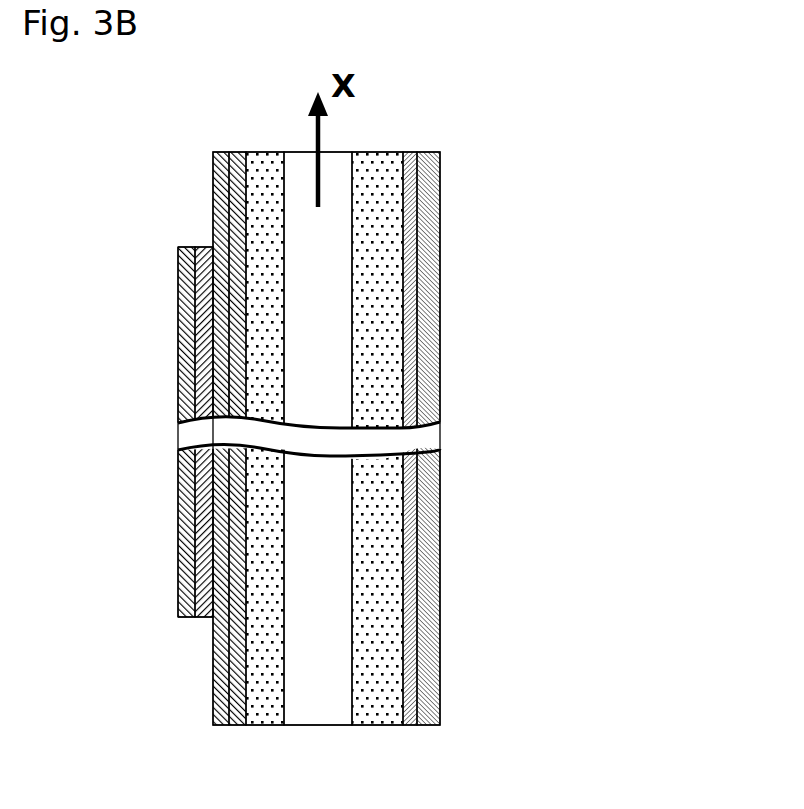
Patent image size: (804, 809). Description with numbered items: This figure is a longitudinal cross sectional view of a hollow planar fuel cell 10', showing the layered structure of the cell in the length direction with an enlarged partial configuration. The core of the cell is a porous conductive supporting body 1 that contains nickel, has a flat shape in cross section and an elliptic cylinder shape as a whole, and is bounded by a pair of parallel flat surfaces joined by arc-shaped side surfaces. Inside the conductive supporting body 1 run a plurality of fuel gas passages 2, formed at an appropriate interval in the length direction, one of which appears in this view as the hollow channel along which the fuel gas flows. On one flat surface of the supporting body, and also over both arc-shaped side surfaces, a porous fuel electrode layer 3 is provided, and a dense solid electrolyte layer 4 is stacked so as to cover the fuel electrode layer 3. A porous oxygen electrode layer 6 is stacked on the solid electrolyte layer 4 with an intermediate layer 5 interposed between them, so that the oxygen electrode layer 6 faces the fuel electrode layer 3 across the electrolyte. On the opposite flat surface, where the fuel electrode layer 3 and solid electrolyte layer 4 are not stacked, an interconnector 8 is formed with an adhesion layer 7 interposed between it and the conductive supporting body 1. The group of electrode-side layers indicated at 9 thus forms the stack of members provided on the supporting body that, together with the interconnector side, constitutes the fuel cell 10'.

The conductive supporting body 1 is at (368, 168).
The fuel gas passages 2 is at (285, 175).
The fuel electrode layer 3 is at (237, 152).
The solid electrolyte layer 4 is at (222, 152).
The intermediate layer 5 is at (202, 247).
The oxygen electrode layer 6 is at (184, 247).
The adhesion layer 7 is at (420, 338).
The interconnector 8 is at (440, 170).
The negative electrode unit 9 is at (156, 375).
The fuel cell 10' is at (389, 438).